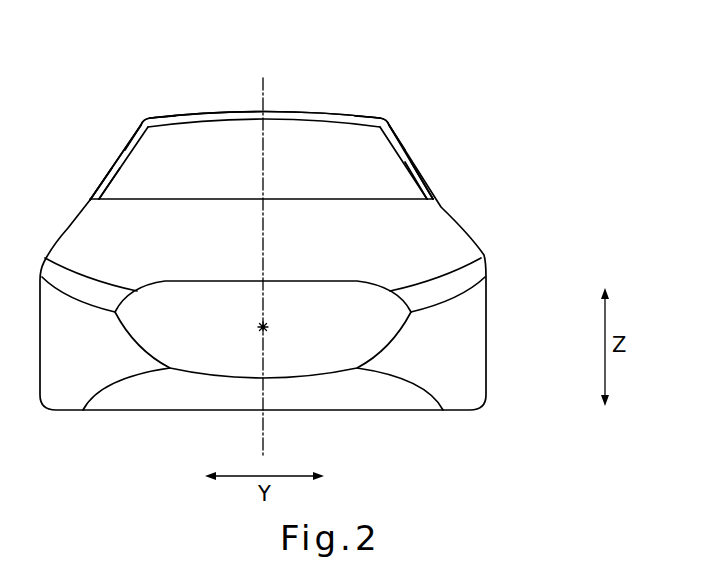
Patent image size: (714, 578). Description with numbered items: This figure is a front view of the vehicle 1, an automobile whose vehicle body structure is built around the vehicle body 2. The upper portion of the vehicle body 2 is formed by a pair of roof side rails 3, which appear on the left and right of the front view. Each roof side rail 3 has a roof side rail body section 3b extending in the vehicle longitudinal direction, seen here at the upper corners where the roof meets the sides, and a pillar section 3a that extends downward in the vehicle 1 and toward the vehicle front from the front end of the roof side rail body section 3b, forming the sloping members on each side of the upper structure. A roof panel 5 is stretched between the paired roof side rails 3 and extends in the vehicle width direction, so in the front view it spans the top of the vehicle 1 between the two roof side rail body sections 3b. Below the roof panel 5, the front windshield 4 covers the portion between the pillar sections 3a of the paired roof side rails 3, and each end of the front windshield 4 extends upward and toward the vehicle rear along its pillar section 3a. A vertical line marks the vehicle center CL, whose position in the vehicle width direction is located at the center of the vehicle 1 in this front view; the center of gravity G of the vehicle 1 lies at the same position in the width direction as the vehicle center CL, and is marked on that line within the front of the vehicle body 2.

The vehicle 1 is at (487, 69).
The vehicle body 2 is at (473, 338).
The roof side rail 3 is at (105, 163).
The pillar section 3a is at (102, 172).
The roof side rail body section 3b is at (143, 119).
The front windshield 4 is at (372, 157).
The roof panel 5 is at (300, 113).
The center of gravity G is at (262, 330).
The vehicle center CL is at (265, 430).